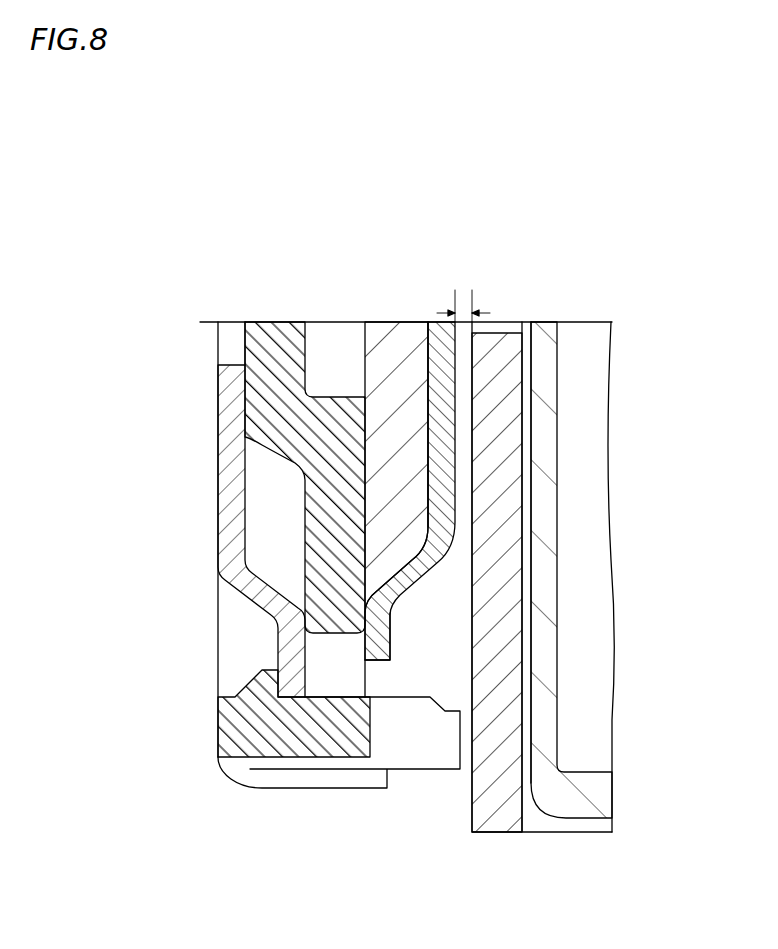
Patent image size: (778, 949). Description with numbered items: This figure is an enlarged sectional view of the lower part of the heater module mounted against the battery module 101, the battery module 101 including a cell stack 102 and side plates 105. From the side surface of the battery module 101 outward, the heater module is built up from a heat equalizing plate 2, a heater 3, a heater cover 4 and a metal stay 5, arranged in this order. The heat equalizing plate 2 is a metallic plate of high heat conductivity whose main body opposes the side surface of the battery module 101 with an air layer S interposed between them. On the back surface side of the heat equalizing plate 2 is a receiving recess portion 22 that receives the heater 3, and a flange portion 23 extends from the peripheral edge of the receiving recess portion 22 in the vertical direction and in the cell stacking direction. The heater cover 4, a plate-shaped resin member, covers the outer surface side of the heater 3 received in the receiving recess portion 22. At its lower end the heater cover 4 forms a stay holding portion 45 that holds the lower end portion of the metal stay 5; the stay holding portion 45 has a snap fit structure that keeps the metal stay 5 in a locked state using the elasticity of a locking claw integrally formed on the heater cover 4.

The heat equalizing plate 2 is at (433, 318).
The heater 3 is at (383, 338).
The heater cover 4 is at (272, 338).
The metal stay 5 is at (225, 470).
The receiving recess portion 22 is at (427, 378).
The flange portion 23 is at (396, 632).
The stay holding portion 45 is at (222, 727).
The battery module 101 is at (572, 303).
The cell stack 102 is at (570, 808).
The side plate 105 is at (462, 806).
The air layer S is at (463, 298).